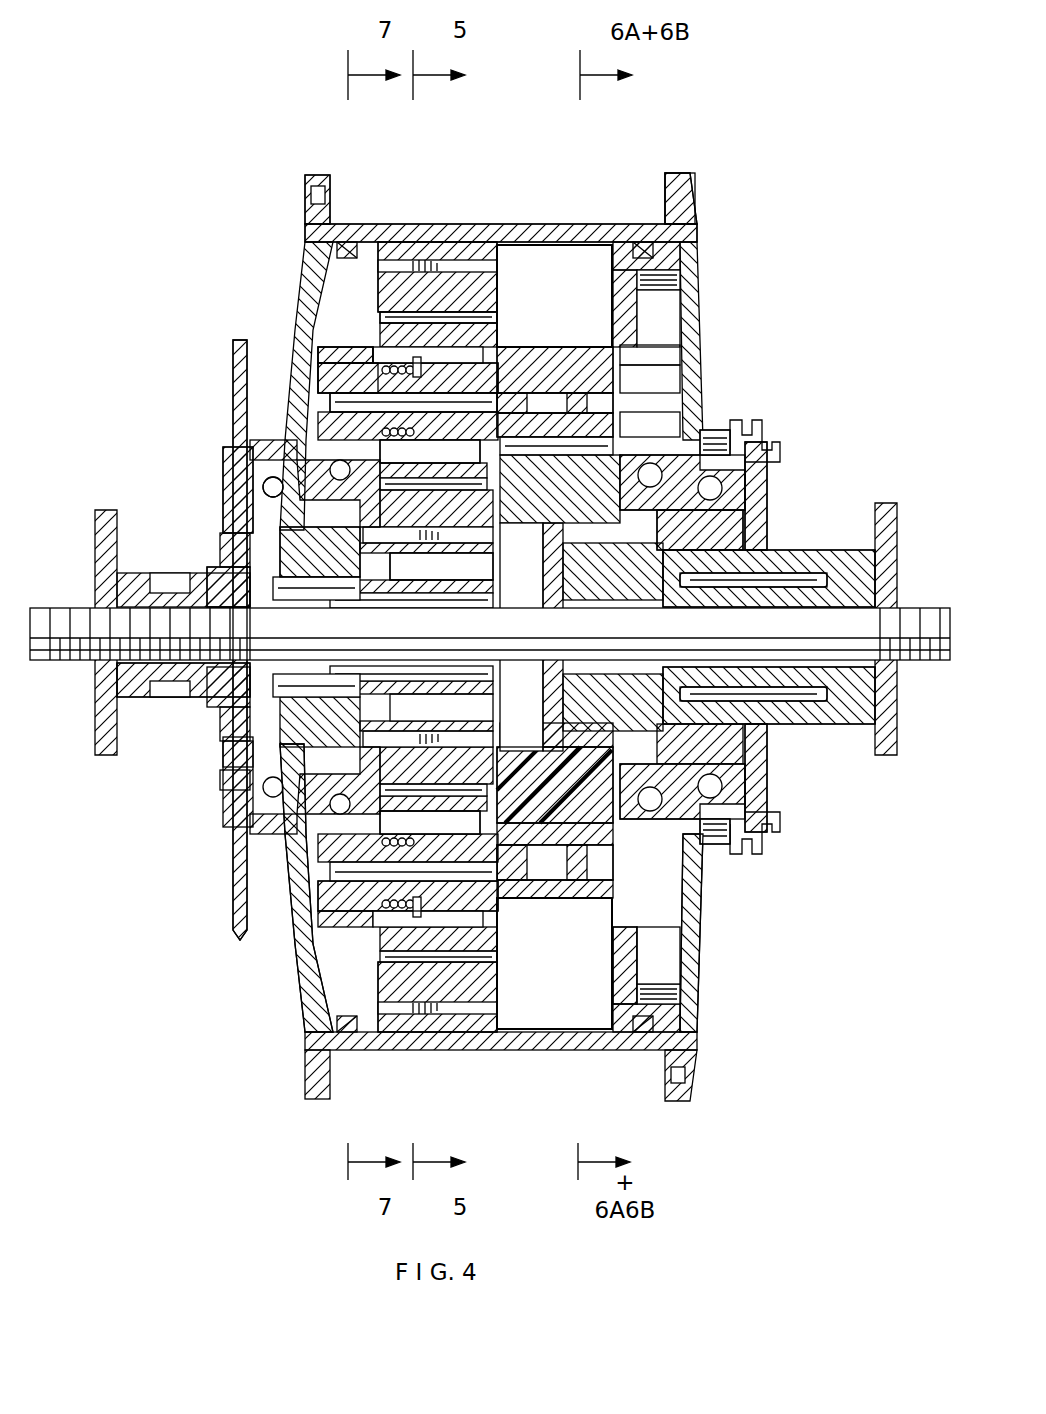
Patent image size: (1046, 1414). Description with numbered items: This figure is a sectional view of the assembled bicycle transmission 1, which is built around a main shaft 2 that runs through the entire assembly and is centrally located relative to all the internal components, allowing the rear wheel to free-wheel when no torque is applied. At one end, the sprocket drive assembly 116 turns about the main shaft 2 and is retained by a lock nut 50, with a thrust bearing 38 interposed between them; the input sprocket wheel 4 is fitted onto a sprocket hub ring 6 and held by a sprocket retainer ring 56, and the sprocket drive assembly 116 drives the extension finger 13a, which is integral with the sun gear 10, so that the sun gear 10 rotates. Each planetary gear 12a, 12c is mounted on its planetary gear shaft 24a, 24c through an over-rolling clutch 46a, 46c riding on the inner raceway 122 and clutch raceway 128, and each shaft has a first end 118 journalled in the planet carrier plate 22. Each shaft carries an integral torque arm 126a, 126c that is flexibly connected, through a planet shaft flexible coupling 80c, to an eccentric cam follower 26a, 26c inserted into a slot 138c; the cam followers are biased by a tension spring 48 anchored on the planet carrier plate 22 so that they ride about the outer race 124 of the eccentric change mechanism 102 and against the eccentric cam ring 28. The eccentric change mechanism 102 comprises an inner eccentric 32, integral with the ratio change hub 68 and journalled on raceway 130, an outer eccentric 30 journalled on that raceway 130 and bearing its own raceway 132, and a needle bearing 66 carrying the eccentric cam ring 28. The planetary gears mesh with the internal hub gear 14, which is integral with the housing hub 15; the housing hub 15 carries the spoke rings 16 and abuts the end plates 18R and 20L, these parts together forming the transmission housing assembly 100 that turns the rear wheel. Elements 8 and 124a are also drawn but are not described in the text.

The transmission 1 is at (283, 140).
The main shaft 2 is at (80, 610).
The input sprocket wheel 4 is at (235, 890).
The sprocket hub ring 6 is at (243, 462).
The seal 8 is at (260, 740).
The sun gear 10 is at (400, 690).
The planetary gear 12a is at (413, 272).
The planetary gear 12c is at (420, 1030).
The extension finger 13a is at (320, 540).
The internal hub gear 14 is at (502, 260).
The housing hub 15 is at (478, 234).
The spoke rings 16 is at (684, 204).
The end plate 18R is at (295, 955).
The end plate 20L is at (710, 985).
The planet carrier plate 22 is at (385, 358).
The planetary gear shaft 24a is at (665, 386).
The planetary gear shaft 24c is at (330, 875).
The eccentric cam follower 26a is at (520, 405).
The eccentric cam follower 26c is at (545, 835).
The eccentric cam ring 28 is at (605, 470).
The outer eccentric 30 is at (690, 515).
The inner eccentric 32 is at (700, 545).
The thrust bearing 38 is at (230, 695).
The over-rolling clutch 46a is at (520, 290).
The over-rolling clutch 46c is at (380, 790).
The tension spring 48 is at (365, 320).
The lock nut 50 is at (235, 570).
The sprocket retainer ring 56 is at (230, 780).
The needle bearing 66 is at (730, 440).
The ratio change hub 68 is at (770, 825).
The planet shaft flexible coupling 80c is at (590, 800).
The transmission housing assembly 100 is at (298, 245).
The eccentric change mechanism 102 is at (640, 570).
The sprocket drive assembly 116 is at (235, 455).
The first end 118 is at (330, 395).
The inner raceway 122 is at (497, 306).
The outer race 124 is at (665, 425).
The ring 124a is at (325, 368).
The torque arm 126a is at (545, 400).
The torque arm 126c is at (580, 870).
The clutch raceway 128 is at (300, 260).
The raceway 130 is at (720, 695).
The raceway 132 is at (745, 470).
The slot 138c is at (700, 830).